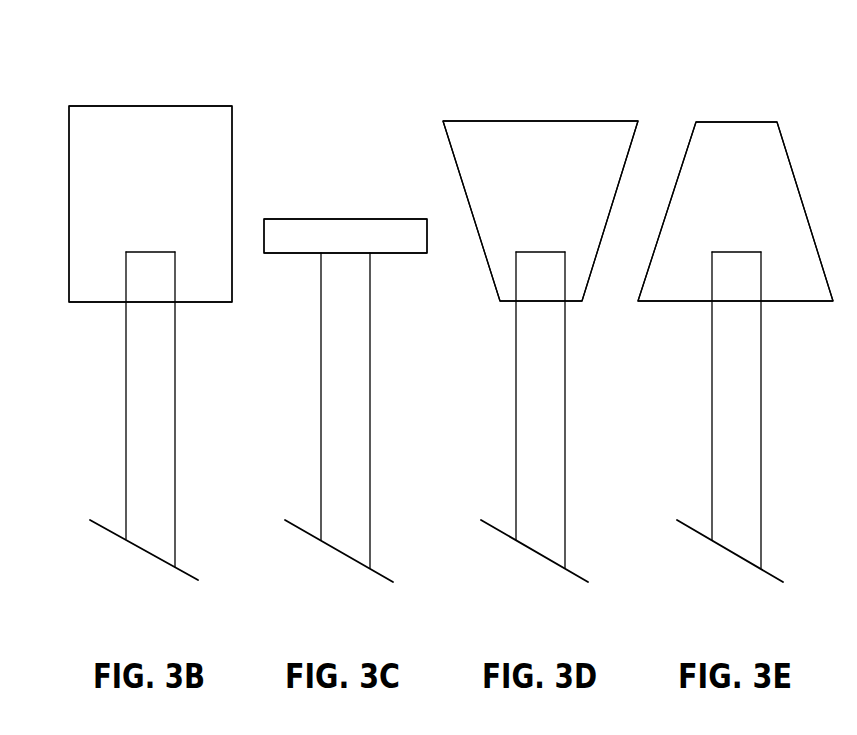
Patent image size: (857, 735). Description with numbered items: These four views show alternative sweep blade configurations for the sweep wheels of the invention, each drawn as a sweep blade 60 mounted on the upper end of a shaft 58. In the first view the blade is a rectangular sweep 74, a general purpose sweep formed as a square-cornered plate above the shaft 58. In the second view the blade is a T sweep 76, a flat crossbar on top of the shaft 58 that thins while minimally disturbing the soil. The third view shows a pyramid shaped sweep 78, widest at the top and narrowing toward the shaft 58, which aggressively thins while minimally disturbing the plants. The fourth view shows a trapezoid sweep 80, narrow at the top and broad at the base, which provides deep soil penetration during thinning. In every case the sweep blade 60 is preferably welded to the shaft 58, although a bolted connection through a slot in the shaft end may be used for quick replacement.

In FIG. 3B, the shaft 58 is at (152, 376).
In FIG. 3C, the shaft 58 is at (348, 376).
In FIG. 3D, the shaft 58 is at (543, 375).
In FIG. 3E, the shaft 58 is at (738, 375).
In FIG. 3B, the sweep blade 60 is at (158, 78).
In FIG. 3C, the sweep blade 60 is at (310, 178).
In FIG. 3D, the sweep blade 60 is at (544, 87).
In FIG. 3E, the sweep blade 60 is at (727, 108).
In FIG. 3B, the rectangular sweep 74 is at (168, 180).
In FIG. 3C, the T sweep 76 is at (350, 232).
In FIG. 3D, the pyramid shaped sweep 78 is at (558, 180).
In FIG. 3E, the trapezoid sweep 80 is at (755, 180).